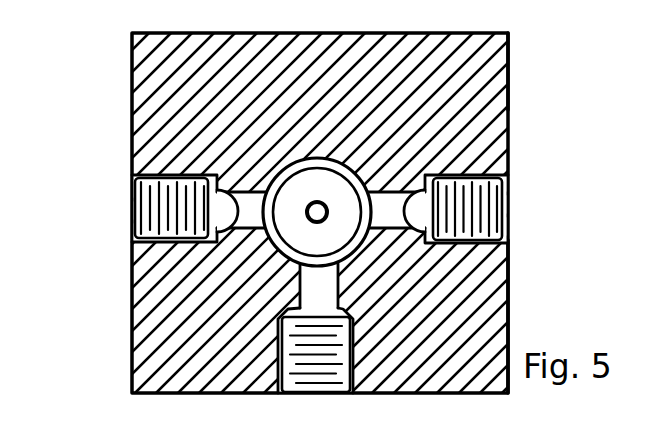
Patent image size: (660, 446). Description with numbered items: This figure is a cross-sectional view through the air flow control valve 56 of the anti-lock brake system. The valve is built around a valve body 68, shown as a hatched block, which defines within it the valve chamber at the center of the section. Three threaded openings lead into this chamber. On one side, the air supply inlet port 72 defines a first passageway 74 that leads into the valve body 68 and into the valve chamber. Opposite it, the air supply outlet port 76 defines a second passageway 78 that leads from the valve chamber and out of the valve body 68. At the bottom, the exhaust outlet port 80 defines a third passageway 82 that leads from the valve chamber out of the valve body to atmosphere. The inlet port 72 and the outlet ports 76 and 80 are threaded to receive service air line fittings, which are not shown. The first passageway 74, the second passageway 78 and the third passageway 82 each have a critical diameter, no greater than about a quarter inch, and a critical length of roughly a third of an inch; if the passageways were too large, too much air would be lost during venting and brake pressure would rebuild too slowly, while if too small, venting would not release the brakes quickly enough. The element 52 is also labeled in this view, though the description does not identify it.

The valve body assembly 52 is at (557, 113).
The air flow control valve 56 is at (518, 61).
The valve body 68 is at (508, 296).
The air supply inlet port 72 is at (503, 179).
The first passageway 74 is at (423, 213).
The air supply outlet port 76 is at (138, 188).
The second passageway 78 is at (218, 214).
The exhaust outlet port 80 is at (348, 403).
The third passageway 82 is at (331, 306).